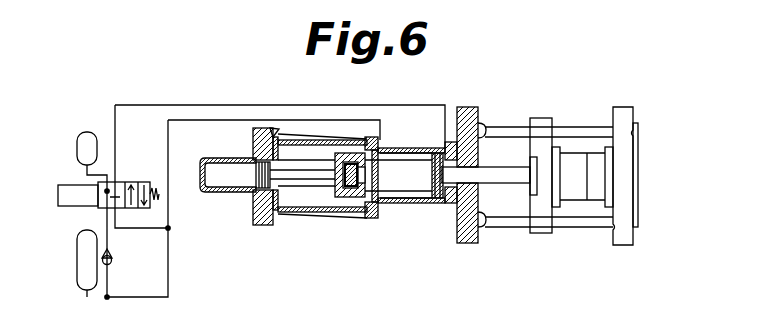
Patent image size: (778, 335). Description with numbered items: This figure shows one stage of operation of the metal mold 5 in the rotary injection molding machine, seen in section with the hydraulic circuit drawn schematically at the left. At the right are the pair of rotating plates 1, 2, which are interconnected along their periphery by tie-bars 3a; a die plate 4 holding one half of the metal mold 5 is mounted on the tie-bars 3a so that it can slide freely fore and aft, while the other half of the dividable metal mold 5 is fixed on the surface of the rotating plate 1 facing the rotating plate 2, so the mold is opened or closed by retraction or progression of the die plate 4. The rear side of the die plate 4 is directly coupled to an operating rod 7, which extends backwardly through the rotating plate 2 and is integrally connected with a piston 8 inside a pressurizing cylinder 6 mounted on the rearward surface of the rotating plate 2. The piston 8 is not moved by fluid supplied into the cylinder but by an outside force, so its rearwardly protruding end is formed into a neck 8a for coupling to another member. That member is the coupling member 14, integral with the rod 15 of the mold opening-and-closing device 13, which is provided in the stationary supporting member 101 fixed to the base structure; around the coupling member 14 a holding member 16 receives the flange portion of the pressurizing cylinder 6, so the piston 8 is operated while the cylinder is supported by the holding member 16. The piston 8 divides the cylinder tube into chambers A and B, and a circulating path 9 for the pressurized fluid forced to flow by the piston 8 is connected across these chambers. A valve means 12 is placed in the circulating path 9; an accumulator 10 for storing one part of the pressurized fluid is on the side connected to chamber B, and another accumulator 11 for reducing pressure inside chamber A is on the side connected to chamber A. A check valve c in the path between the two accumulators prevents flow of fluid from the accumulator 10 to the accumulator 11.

The rotating plate 1 is at (625, 117).
The rotating plate 2 is at (468, 115).
The tie-bars 3a is at (580, 130).
The die plate 4 is at (542, 127).
The metal mold 5 is at (575, 193).
The pressurizing cylinder 6 is at (422, 203).
The operating rod 7 is at (503, 173).
The piston 8 is at (403, 192).
The neck 8a is at (355, 197).
The circulating path 9 is at (72, 173).
The accumulator 10 is at (78, 267).
The accumulator 11 is at (82, 132).
The valve means 12 is at (135, 181).
The mold opening-and-closing device 13 is at (218, 193).
The coupling member 14 is at (340, 203).
The rod 15 is at (303, 180).
The holding member 16 is at (277, 227).
The stationary supporting member 101 is at (258, 225).
The chamber A is at (445, 207).
The chamber B is at (413, 148).
The check valve c is at (115, 260).